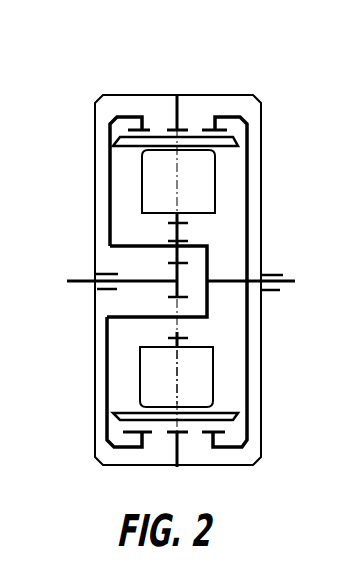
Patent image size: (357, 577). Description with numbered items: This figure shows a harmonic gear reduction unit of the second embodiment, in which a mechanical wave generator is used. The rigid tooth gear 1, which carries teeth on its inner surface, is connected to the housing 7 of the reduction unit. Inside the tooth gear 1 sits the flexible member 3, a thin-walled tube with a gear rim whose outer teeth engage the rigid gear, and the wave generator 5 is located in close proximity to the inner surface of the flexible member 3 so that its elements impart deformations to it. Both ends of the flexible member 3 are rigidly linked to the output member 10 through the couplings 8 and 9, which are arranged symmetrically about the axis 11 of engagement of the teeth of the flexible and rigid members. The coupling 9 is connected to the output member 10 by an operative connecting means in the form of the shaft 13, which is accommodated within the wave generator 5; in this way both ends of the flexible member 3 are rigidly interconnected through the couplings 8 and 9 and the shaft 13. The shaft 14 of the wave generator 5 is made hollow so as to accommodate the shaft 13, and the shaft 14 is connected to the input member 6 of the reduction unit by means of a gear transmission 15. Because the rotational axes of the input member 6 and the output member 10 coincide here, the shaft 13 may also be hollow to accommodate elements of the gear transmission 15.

The rigid tooth gear 1 is at (191, 476).
The flexible member 3 is at (124, 412).
The wave generator 5 is at (141, 357).
The input member 6 is at (77, 297).
The housing 7 is at (95, 229).
The coupling 8 is at (209, 127).
The coupling 9 is at (143, 127).
The output member 10 is at (291, 301).
The axis of engagement 11 is at (188, 378).
The shaft 13 is at (219, 331).
The shaft of the wave generator 14 is at (196, 211).
The gear transmission 15 is at (218, 247).